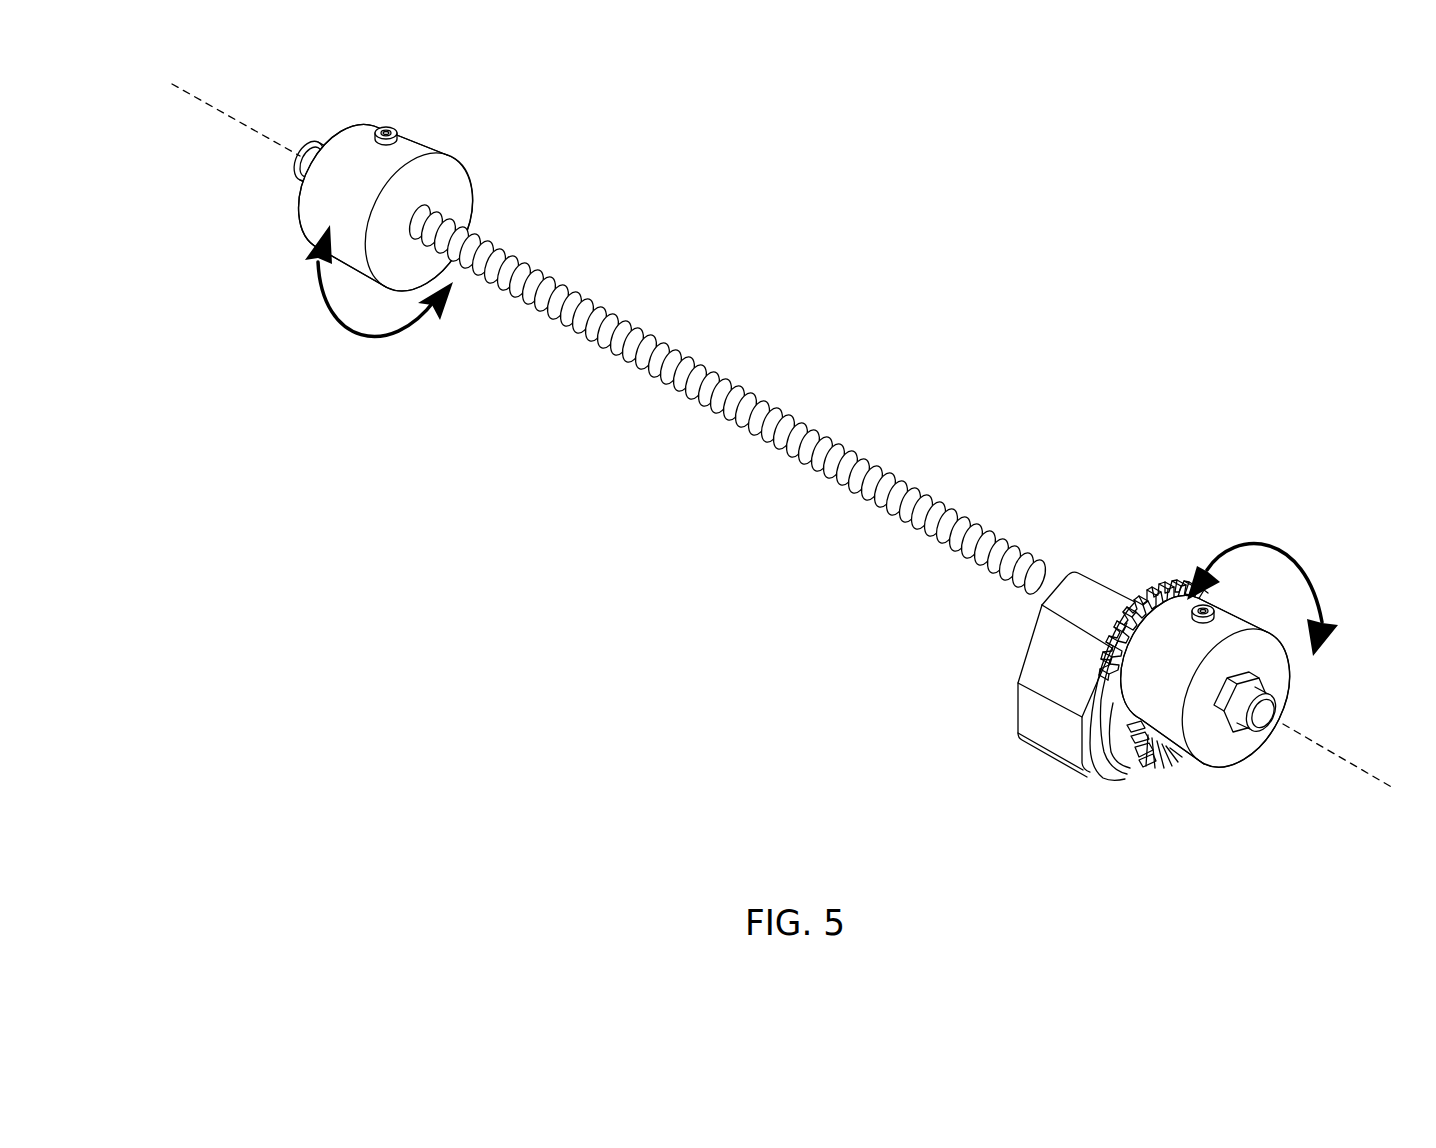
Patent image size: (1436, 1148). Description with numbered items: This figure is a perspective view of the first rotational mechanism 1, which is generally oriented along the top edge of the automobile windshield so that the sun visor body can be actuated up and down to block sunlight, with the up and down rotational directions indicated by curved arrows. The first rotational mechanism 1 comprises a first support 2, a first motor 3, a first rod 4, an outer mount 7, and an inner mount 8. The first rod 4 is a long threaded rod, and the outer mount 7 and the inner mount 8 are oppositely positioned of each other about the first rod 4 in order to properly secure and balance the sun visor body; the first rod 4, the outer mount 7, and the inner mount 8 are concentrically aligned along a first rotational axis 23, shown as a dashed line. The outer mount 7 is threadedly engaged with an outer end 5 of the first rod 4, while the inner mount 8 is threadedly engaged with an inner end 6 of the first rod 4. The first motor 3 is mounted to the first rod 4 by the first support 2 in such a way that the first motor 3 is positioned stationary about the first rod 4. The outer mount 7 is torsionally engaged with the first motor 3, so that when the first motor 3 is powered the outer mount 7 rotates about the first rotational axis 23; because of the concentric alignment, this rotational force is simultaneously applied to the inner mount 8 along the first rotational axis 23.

The first rotational mechanism 1 is at (950, 372).
The first support 2 is at (1098, 582).
The first motor 3 is at (1120, 760).
The first rod 4 is at (730, 428).
The outer end 5 is at (1291, 716).
The inner end 6 is at (289, 170).
The outer mount 7 is at (1218, 757).
The inner mount 8 is at (388, 124).
The first rotational axis 23 is at (257, 128).